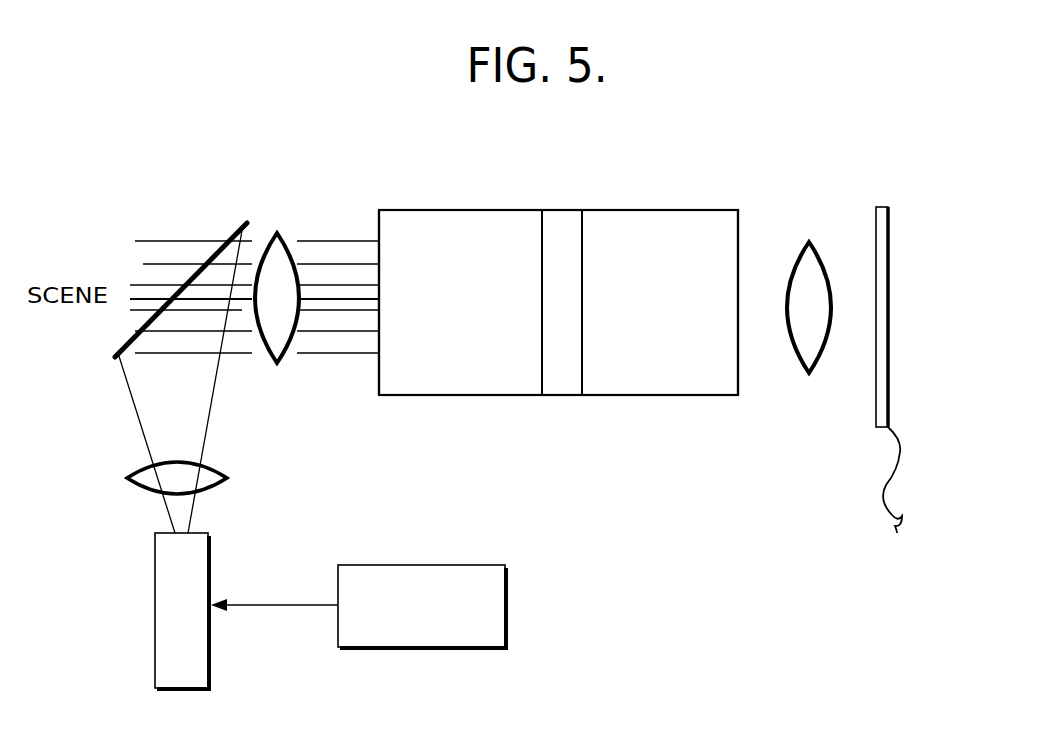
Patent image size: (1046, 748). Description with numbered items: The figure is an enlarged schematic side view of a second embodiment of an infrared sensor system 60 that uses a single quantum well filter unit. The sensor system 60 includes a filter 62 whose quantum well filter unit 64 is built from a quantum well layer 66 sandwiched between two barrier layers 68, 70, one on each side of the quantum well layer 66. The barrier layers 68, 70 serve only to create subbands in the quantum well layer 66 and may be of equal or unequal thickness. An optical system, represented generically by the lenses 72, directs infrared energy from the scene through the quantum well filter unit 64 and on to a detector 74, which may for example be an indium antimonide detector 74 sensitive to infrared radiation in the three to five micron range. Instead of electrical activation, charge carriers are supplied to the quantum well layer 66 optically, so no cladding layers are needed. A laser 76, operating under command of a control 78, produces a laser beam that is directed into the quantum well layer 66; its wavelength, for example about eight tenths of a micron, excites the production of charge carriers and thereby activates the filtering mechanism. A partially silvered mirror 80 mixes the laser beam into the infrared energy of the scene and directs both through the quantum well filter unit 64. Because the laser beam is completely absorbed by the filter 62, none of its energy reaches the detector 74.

The sensor system 60 is at (254, 152).
The filter 62 is at (436, 476).
The quantum well filter unit 64 is at (395, 146).
The quantum well layer 66 is at (552, 398).
The barrier layer 68 is at (420, 398).
The barrier layer 70 is at (702, 398).
The lenses 72 is at (275, 364).
The detector 74 is at (875, 207).
The laser 76 is at (210, 692).
The control 78 is at (505, 647).
The partially silvered mirror 80 is at (244, 223).